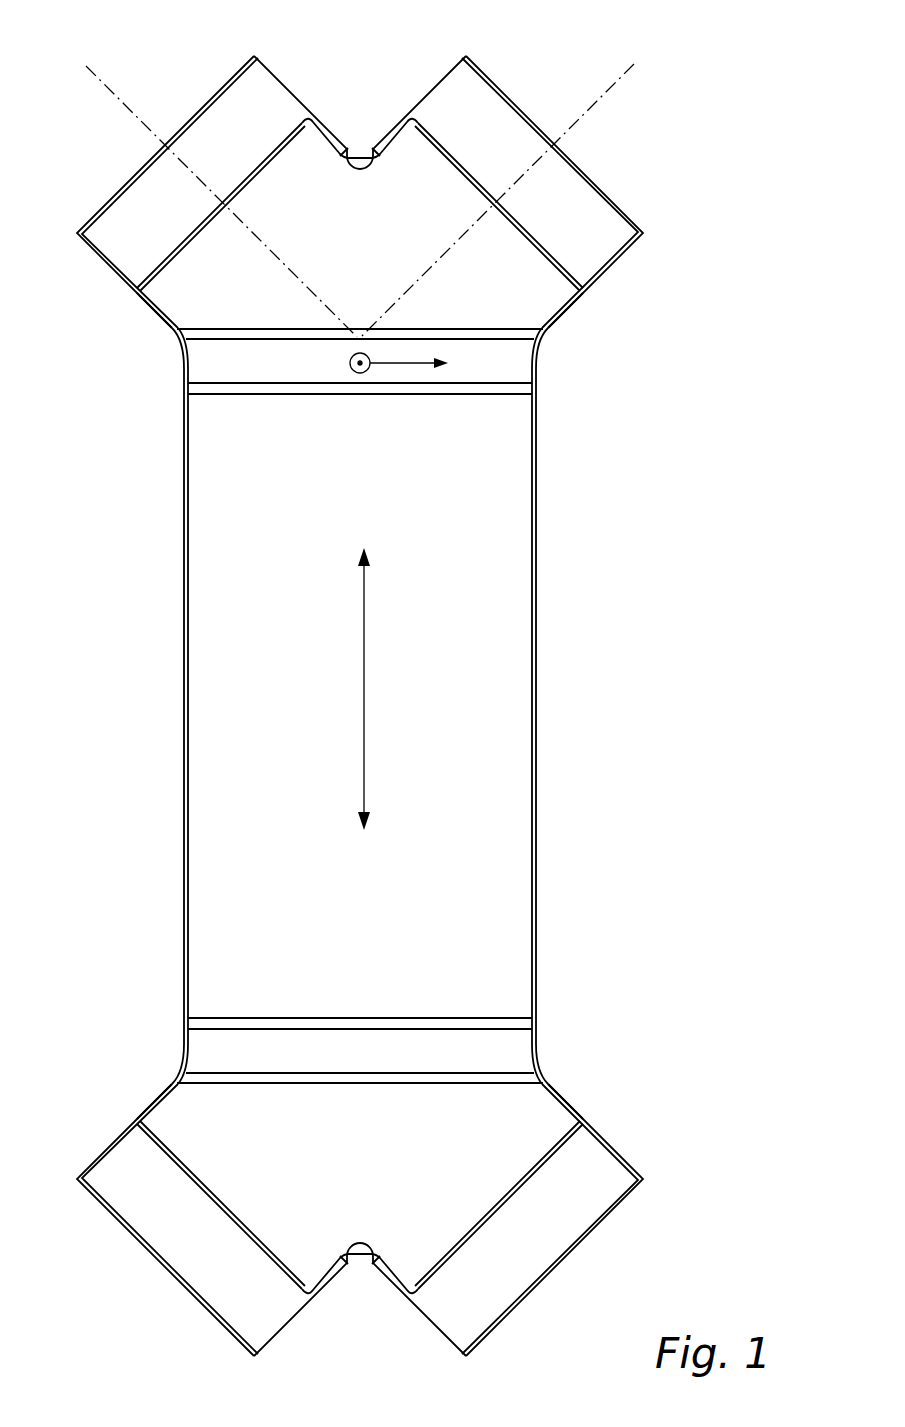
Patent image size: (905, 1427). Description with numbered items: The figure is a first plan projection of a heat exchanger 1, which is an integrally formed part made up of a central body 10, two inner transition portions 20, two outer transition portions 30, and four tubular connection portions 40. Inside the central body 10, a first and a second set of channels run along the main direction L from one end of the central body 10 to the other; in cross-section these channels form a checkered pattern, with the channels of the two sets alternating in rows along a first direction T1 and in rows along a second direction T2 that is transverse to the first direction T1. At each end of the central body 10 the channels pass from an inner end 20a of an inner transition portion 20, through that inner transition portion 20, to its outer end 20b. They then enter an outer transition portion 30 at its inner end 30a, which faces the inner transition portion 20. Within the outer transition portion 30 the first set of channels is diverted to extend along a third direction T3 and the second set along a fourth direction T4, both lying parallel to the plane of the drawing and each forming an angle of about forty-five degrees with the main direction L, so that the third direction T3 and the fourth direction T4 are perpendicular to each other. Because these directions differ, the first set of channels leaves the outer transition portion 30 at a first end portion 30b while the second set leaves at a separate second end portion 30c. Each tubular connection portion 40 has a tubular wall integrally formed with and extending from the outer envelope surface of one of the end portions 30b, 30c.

The heat exchanger 1 is at (381, 682).
The central body 10 is at (167, 393).
The inner transition portion 20 is at (557, 330).
The inner end of inner transition portion 20a is at (350, 383).
The outer end of inner transition portion 20b is at (330, 325).
The outer transition portion 30 is at (375, 704).
The inner end of outer transition portion 30a is at (387, 337).
The first end portion 30b is at (533, 240).
The second end portion 30c is at (190, 232).
The tubular connection portion 40 is at (224, 80).
The first direction T1 is at (370, 372).
The second direction T2 is at (452, 366).
The third direction T3 is at (598, 102).
The fourth direction T4 is at (130, 102).
The main direction L is at (373, 689).